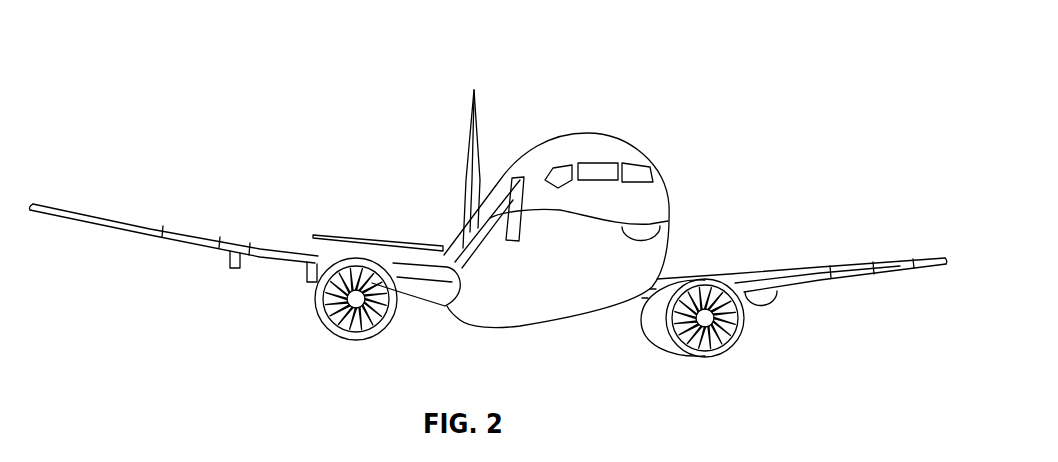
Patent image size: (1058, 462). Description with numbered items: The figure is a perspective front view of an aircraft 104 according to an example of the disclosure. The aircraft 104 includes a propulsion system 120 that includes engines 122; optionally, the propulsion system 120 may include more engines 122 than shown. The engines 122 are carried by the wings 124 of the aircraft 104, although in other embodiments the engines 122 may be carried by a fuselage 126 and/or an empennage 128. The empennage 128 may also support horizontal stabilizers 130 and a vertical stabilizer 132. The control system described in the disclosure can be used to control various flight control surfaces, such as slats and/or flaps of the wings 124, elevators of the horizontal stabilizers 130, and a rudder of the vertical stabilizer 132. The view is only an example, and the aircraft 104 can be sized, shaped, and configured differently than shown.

The aircraft 104 is at (266, 96).
The propulsion system 120 is at (301, 327).
The engines 122 is at (352, 340).
The wings 124 is at (157, 230).
The fuselage 126 is at (670, 192).
The empennage 128 is at (463, 218).
The horizontal stabilizers 130 is at (350, 238).
The vertical stabilizer 132 is at (472, 130).